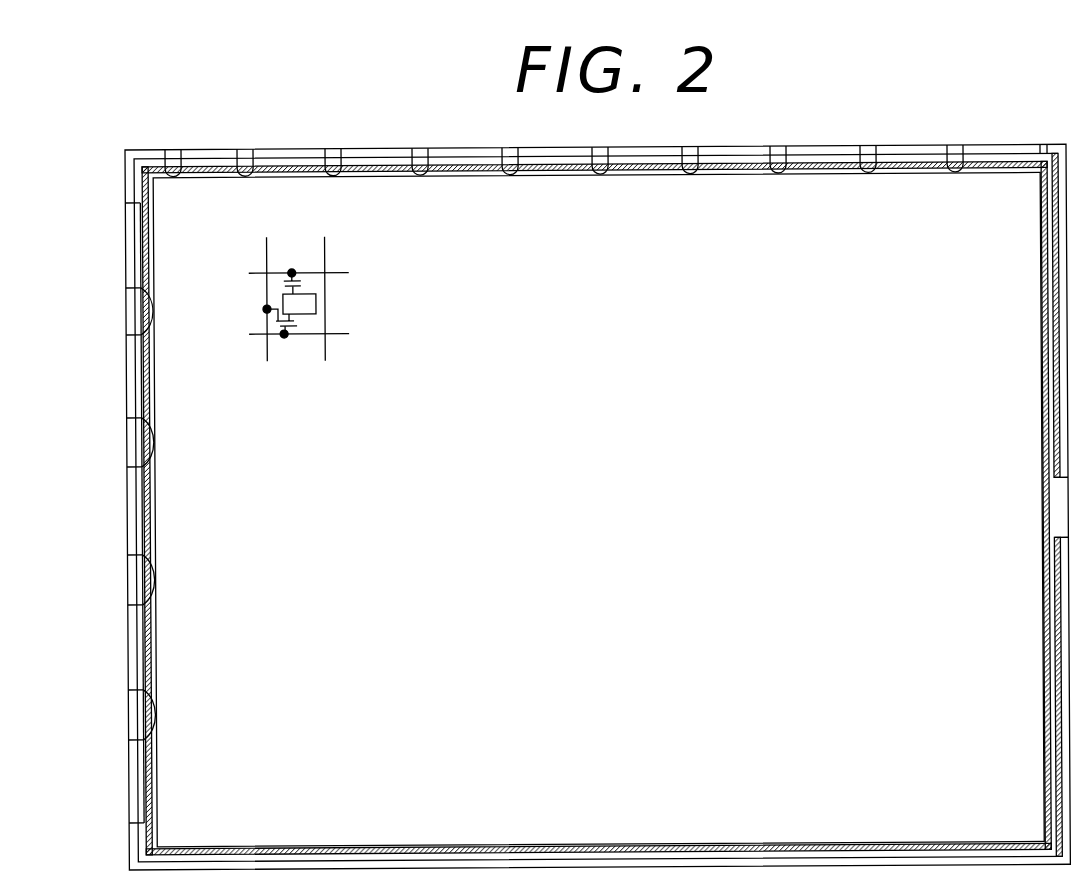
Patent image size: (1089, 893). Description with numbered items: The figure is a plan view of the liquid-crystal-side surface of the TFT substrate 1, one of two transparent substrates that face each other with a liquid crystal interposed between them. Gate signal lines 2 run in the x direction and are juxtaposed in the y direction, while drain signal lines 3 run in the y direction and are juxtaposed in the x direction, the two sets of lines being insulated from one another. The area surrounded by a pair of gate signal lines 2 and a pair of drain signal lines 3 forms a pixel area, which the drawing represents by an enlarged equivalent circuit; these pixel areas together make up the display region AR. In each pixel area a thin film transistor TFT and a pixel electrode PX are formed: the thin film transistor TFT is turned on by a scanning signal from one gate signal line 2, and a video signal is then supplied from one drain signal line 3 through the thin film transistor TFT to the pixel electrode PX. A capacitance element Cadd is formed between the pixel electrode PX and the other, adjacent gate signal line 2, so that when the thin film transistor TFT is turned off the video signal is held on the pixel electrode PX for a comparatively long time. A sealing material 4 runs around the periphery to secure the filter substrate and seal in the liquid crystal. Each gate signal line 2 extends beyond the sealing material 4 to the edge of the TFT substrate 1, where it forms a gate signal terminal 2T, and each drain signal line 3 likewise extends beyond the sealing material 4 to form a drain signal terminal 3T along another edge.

The TFT substrate 1 is at (140, 150).
The gate signal line 2 is at (348, 274).
The drain signal line 3 is at (257, 357).
The gate signal terminal 2T is at (128, 272).
The drain signal terminal 3T is at (230, 157).
The sealing material 4 is at (1045, 453).
The display area AR is at (598, 509).
The pixel electrode PX is at (315, 302).
The capacitance element Cadd is at (283, 271).
The thin film transistor TFT is at (267, 329).